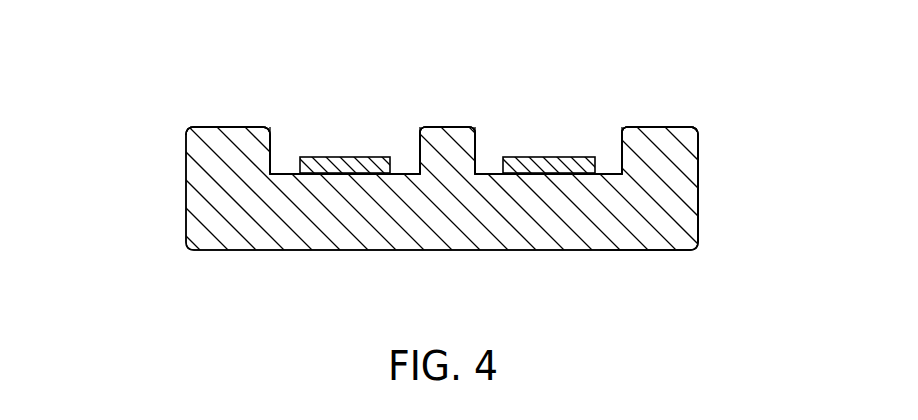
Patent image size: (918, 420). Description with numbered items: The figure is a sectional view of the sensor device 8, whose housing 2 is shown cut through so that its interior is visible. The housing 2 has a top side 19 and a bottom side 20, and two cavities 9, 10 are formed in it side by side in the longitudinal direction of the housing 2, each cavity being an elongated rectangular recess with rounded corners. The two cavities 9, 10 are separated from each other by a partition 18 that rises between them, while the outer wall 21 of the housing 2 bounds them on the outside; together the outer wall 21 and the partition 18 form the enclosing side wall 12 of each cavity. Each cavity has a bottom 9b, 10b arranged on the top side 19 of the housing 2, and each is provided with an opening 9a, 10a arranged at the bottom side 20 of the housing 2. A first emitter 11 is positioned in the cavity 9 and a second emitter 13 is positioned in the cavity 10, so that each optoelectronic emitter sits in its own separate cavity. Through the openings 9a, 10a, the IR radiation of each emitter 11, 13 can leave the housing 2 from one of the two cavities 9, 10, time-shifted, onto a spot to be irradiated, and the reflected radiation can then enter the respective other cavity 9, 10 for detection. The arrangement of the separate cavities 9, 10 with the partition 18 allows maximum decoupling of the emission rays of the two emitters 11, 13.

The housing 2 is at (562, 228).
The sensor device 8 is at (152, 118).
The cavity 9 is at (287, 150).
The opening 9a is at (317, 120).
The bottom 9b is at (292, 177).
The cavity 10 is at (607, 153).
The opening 10a is at (490, 137).
The bottom 10b is at (493, 177).
The first emitter 11 is at (368, 152).
The enclosing side wall 12 is at (205, 78).
The second emitter 13 is at (580, 153).
The partition 18 is at (452, 137).
The top side 19 is at (705, 237).
The bottom side 20 is at (705, 133).
The outer wall 21 is at (215, 143).